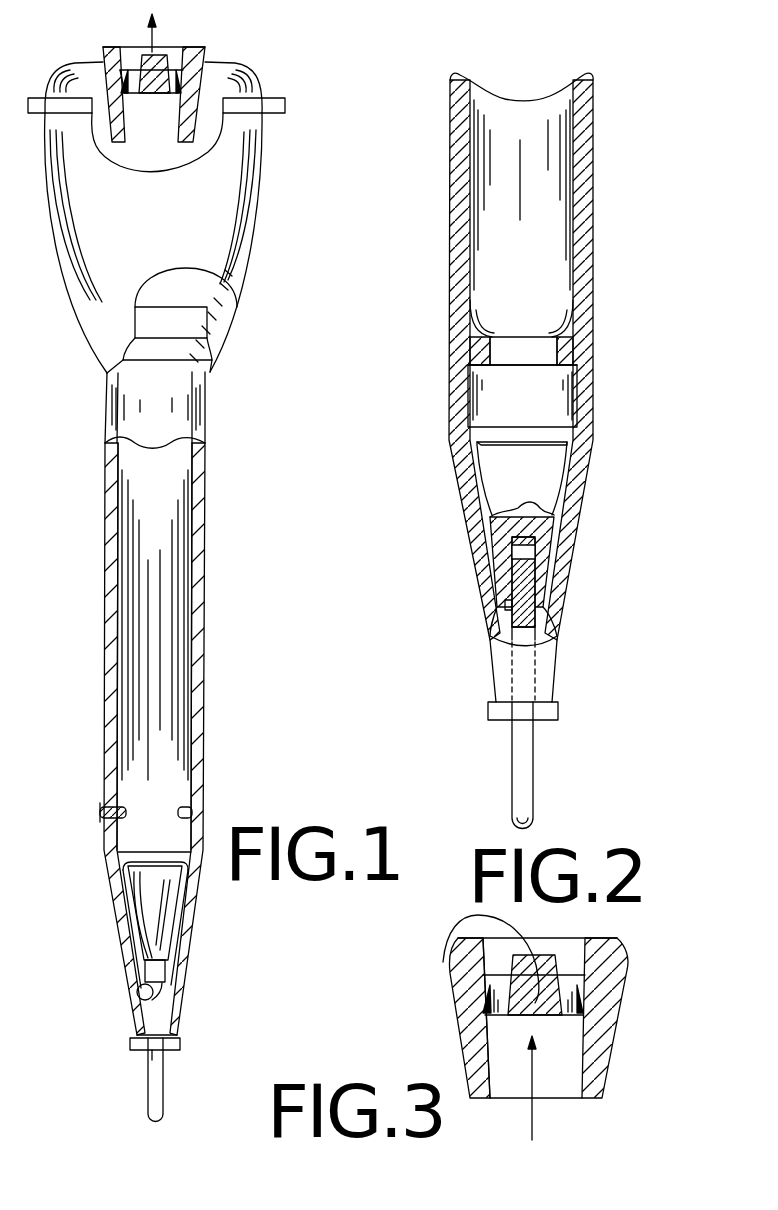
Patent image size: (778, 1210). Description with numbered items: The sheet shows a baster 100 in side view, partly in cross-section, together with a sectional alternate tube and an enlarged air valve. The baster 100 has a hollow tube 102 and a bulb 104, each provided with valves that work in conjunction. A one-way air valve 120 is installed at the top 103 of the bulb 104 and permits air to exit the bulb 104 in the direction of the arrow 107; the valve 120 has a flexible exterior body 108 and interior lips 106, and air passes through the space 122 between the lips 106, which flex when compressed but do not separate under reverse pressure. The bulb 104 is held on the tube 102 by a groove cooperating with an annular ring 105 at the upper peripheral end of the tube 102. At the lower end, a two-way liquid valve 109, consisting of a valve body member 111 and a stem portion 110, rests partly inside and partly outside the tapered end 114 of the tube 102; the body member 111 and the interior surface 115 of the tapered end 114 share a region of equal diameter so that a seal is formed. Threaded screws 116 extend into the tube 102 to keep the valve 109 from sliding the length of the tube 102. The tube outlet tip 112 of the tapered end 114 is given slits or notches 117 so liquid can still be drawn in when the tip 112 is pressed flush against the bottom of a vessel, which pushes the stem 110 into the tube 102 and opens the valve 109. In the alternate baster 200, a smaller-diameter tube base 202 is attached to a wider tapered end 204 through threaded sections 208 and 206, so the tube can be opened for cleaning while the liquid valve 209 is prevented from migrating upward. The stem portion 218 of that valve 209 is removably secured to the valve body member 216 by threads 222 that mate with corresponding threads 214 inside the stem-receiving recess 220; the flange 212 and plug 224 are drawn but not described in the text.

In FIG. 1, the baster 100 is at (176, 575).
In FIG. 1, the hollow tube 102 is at (110, 706).
In FIG. 1, the top of the bulb 103 is at (256, 80).
In FIG. 1, the bulb 104 is at (218, 268).
In FIG. 1, the annular ring 105 is at (212, 347).
In FIG. 1, the interior lips 106 is at (154, 74).
In FIG. 3, the interior lips 106 is at (514, 998).
In FIG. 1, the arrow 107 is at (150, 44).
In FIG. 3, the arrow 107 is at (530, 1098).
In FIG. 1, the flexible exterior body 108 is at (120, 878).
In FIG. 3, the flexible exterior body 108 is at (470, 982).
In FIG. 1, the two-way liquid valve 109 is at (152, 966).
In FIG. 1, the stem portion 110 is at (155, 1091).
In FIG. 1, the valve body member 111 is at (163, 915).
In FIG. 1, the tube outlet tip 112 is at (140, 1046).
In FIG. 1, the tapered end 114 is at (138, 990).
In FIG. 1, the interior surface 115 is at (150, 1000).
In FIG. 1, the threaded screws 116 is at (100, 813).
In FIG. 1, the slits or notches 117 is at (157, 1052).
In FIG. 1, the one-way air valve 120 is at (103, 62).
In FIG. 3, the one-way air valve 120 is at (627, 976).
In FIG. 3, the space between the lips 122 is at (470, 959).
In FIG. 2, the baster 200 is at (486, 450).
In FIG. 2, the tube base 202 is at (456, 253).
In FIG. 2, the tapered end 204 is at (562, 572).
In FIG. 2, the threaded section 206 is at (456, 352).
In FIG. 2, the threaded section 208 is at (462, 372).
In FIG. 2, the liquid valve 209 is at (562, 455).
In FIG. 2, the pin flange 212 is at (500, 710).
In FIG. 2, the threads 214 is at (528, 563).
In FIG. 2, the valve body member 216 is at (538, 484).
In FIG. 2, the stem portion 218 is at (526, 768).
In FIG. 2, the stem-receiving recess 220 is at (522, 552).
In FIG. 2, the threads 222 is at (506, 601).
In FIG. 2, the plug 224 is at (514, 403).